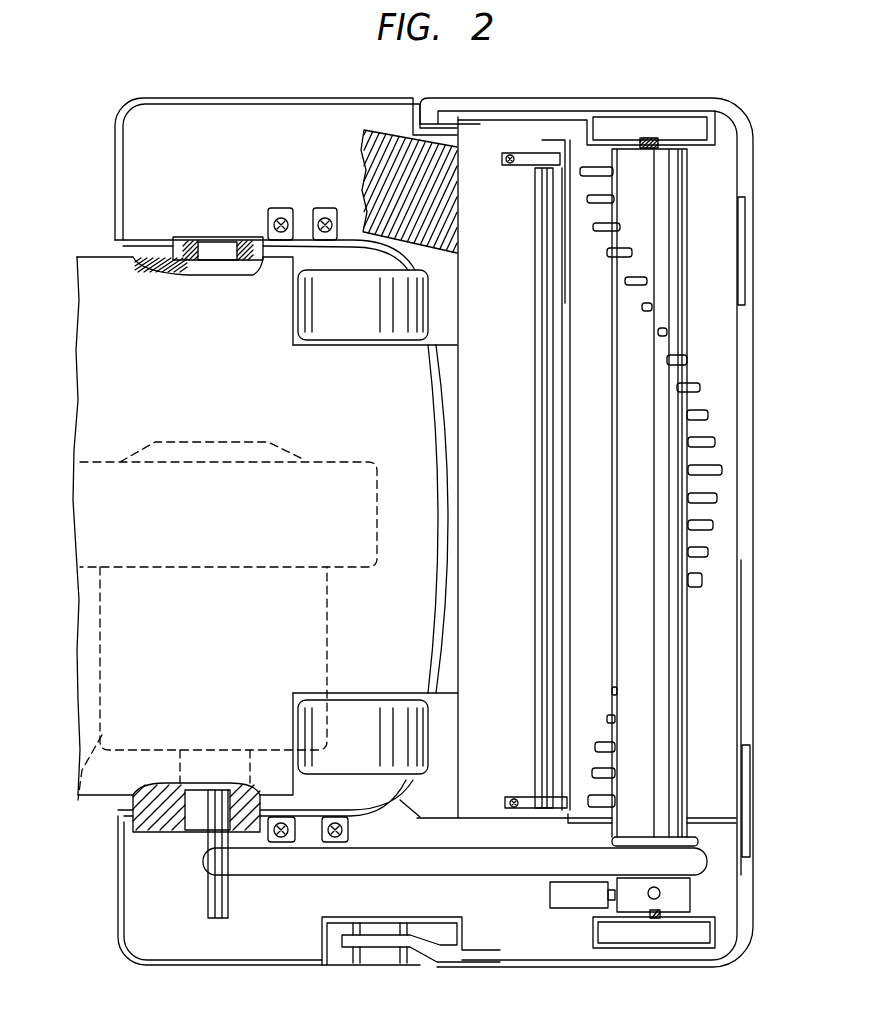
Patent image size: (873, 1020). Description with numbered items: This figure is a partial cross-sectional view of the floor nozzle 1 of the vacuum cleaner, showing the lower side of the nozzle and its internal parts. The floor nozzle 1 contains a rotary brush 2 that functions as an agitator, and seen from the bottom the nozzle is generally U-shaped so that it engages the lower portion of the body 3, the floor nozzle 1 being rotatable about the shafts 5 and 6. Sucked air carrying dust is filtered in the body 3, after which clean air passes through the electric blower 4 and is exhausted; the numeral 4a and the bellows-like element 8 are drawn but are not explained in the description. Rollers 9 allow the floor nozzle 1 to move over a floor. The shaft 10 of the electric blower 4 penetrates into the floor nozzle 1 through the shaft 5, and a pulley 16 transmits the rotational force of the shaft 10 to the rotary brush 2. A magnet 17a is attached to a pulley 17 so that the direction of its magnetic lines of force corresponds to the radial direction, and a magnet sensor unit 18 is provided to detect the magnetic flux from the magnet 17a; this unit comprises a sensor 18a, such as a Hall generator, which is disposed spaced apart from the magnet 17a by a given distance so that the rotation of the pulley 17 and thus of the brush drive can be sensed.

The floor nozzle 1 is at (373, 967).
The rotary brush 2 is at (627, 157).
The body 3 is at (122, 273).
The electric blower 4 is at (75, 632).
The lens unit portion 4a is at (78, 800).
The shaft 5 is at (183, 828).
The shaft 6 is at (238, 250).
The bellows 8 is at (397, 131).
The rollers 9 is at (318, 720).
The shaft 10 is at (213, 904).
The pulley 16 is at (310, 864).
The pulley 17 is at (682, 903).
The magnet 17a is at (650, 898).
The magnet sensor unit 18 is at (555, 897).
The sensor 18a is at (616, 895).